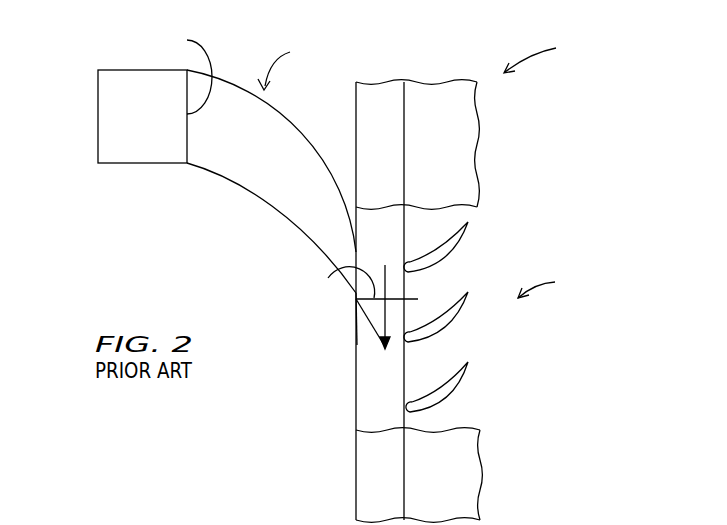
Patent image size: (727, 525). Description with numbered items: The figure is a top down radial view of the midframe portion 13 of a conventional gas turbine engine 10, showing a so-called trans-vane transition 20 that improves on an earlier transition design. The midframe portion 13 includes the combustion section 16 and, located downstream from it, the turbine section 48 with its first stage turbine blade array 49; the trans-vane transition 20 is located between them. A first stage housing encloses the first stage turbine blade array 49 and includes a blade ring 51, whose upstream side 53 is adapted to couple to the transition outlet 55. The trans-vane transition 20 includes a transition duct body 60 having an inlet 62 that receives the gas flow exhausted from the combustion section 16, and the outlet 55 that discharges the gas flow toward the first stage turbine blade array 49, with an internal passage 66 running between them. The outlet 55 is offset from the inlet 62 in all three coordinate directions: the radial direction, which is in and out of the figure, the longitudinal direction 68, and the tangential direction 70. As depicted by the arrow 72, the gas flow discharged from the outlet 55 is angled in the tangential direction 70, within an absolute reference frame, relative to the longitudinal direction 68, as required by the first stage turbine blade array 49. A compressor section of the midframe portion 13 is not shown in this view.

The gas turbine engine 10 is at (549, 56).
The midframe portion 13 is at (292, 63).
The combustion section 16 is at (158, 121).
The trans-vane transition 20 is at (265, 203).
The turbine section 48 is at (557, 284).
The first stage turbine blade array 49 is at (460, 238).
The blade ring 51 is at (453, 160).
The upstream side 53 is at (355, 398).
The transition outlet 55 is at (356, 295).
The transition duct body 60 is at (235, 135).
The inlet 62 is at (187, 40).
The internal passage 66 is at (283, 162).
The longitudinal direction 68 is at (327, 277).
The tangential direction 70 is at (404, 288).
The arrow 72 is at (365, 330).